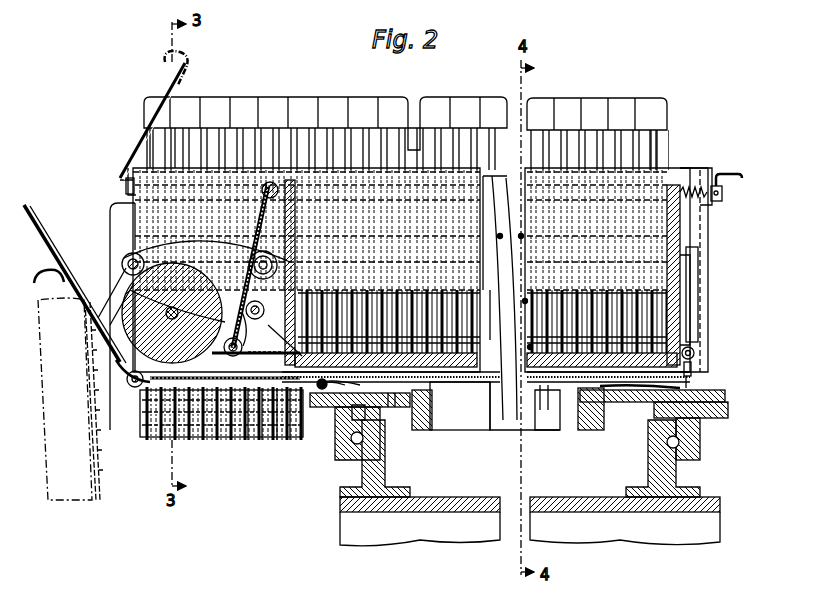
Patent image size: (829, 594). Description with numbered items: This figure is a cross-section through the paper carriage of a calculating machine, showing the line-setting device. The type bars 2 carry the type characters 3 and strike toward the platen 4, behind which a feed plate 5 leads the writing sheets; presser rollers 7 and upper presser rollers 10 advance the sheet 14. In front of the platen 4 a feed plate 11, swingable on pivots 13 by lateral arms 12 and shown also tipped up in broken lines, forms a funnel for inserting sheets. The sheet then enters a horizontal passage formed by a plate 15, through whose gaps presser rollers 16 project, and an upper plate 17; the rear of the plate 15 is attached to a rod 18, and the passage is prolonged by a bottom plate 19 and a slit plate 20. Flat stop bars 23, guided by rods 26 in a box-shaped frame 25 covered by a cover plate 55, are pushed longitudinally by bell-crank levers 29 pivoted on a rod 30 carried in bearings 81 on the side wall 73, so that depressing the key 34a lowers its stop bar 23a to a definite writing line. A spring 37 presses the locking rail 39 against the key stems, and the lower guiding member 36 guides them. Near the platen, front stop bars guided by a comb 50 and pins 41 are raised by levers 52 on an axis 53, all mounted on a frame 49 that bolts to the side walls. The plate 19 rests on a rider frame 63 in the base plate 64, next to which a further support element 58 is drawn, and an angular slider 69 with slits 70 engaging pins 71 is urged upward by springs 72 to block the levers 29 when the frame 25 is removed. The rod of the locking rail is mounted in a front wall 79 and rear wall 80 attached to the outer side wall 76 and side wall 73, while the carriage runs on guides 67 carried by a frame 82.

The type bar 2 is at (64, 495).
The type character 3 is at (94, 400).
The platen 4 is at (130, 298).
The feed plate 5 is at (250, 216).
The presser roller 7 is at (226, 440).
The upper presser roller 10 is at (124, 256).
The feed plate 11 is at (40, 272).
The lateral arm 12 is at (104, 300).
The pivot 13 is at (275, 200).
The sheet of paper 14 is at (40, 205).
The plate 15 is at (118, 374).
The presser roller 16 is at (134, 388).
The plate 17 is at (263, 440).
The rod 18 is at (316, 392).
The plate 19 is at (332, 420).
The plate 20 is at (692, 365).
The stop 23 is at (396, 410).
The stop bar 23a is at (460, 406).
The frame 25 is at (678, 300).
The rod 26 is at (524, 308).
The bell-crank lever 29 is at (506, 372).
The rod 30 is at (522, 236).
The key 34a is at (416, 120).
The lower guiding member 36 is at (705, 165).
The spring 37 is at (692, 188).
The locking rail 39 is at (683, 220).
The pin 41 is at (291, 440).
The frame 49 is at (144, 438).
The comb 50 is at (277, 440).
The lever 52 is at (248, 440).
The axis 53 is at (265, 356).
The cover plate 55 is at (538, 168).
The support 58 is at (428, 420).
The rider frame 63 is at (492, 422).
The base plate 64 is at (728, 410).
The guide 67 is at (386, 470).
The angular slider 69 is at (690, 383).
The slit 70 is at (692, 372).
The pin 71 is at (695, 348).
The spring 72 is at (640, 403).
The side wall 73 is at (695, 306).
The outer side wall 76 is at (116, 212).
The front wall 79 is at (132, 178).
The rear wall 80 is at (702, 248).
The bearing 81 is at (692, 275).
The frame 82 is at (536, 500).